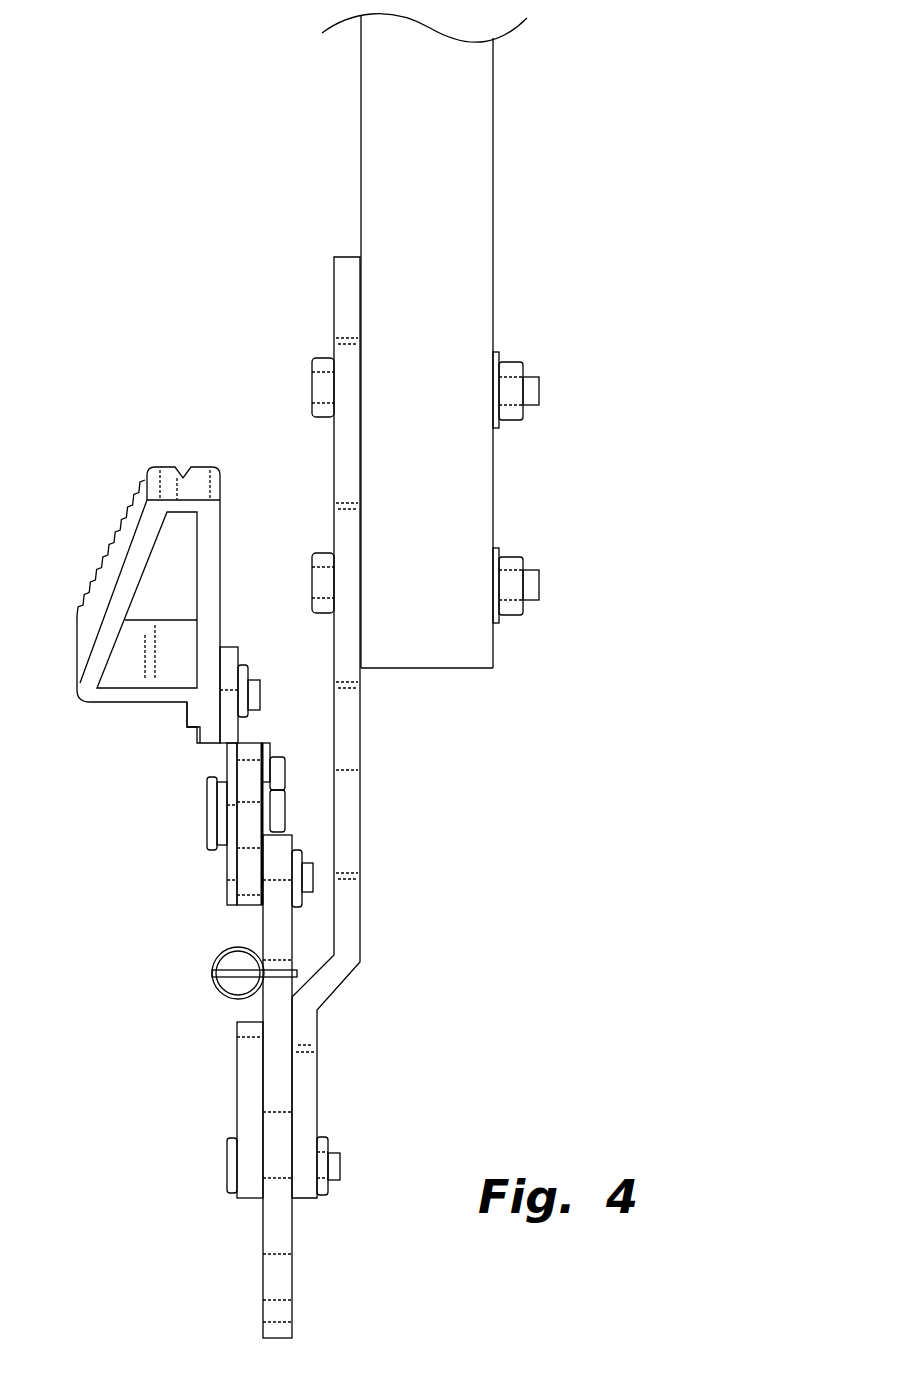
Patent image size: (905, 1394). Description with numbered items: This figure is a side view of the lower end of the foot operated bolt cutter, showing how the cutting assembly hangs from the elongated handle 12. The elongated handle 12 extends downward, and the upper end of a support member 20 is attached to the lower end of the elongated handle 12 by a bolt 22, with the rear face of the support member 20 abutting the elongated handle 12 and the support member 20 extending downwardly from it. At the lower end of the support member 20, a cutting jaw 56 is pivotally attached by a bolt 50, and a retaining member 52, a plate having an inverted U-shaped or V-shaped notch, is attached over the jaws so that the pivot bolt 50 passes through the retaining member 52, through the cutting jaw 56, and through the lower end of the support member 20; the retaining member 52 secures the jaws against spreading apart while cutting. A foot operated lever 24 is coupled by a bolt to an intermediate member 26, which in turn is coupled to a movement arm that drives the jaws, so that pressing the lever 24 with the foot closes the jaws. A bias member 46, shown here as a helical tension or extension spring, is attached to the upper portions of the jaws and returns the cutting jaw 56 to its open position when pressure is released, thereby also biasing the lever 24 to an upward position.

The elongated handle 12 is at (480, 277).
The support member 20 is at (345, 975).
The bolt 22 is at (325, 383).
The foot operated lever 24 is at (118, 552).
The intermediate member 26 is at (213, 760).
The bias member 46 is at (215, 962).
The bolt 50 is at (228, 1178).
The retaining member 52 is at (240, 1093).
The cutting jaw 56 is at (270, 1272).